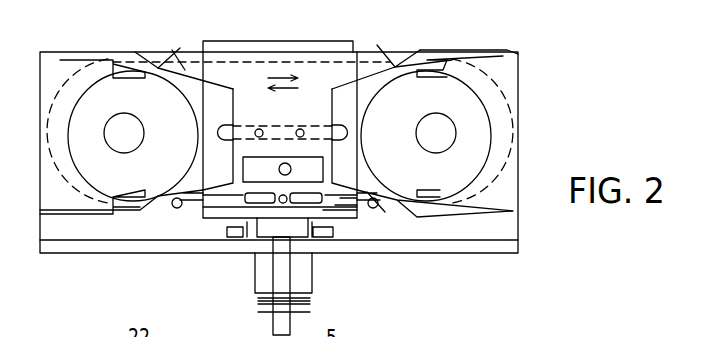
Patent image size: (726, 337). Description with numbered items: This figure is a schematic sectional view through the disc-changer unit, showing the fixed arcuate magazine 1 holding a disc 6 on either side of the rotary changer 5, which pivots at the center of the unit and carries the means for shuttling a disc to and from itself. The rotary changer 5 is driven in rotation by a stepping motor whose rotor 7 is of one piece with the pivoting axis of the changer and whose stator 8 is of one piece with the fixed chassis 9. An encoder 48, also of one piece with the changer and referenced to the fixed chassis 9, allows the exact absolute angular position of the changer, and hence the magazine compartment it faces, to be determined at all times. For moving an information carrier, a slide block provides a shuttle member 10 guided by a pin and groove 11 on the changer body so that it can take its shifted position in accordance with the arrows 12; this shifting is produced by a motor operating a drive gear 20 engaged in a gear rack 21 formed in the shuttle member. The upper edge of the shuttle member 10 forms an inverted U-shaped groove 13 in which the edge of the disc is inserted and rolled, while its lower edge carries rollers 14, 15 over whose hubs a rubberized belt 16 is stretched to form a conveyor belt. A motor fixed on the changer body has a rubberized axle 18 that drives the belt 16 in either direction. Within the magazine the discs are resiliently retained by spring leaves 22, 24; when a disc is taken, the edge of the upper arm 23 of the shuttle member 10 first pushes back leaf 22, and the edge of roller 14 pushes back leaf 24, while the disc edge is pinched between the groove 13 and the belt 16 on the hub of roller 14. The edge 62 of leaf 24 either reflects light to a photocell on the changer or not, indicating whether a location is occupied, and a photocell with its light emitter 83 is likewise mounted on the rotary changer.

The fixed arcuate magazine 1 is at (507, 53).
The rotary changer 5 is at (313, 44).
The disc 6 is at (497, 101).
The rotor 7 is at (265, 230).
The stator 8 is at (322, 238).
The fixed chassis 9 is at (482, 242).
The shuttle member 10 is at (252, 100).
The pin and groove 11 is at (224, 117).
The arrows 12 is at (280, 66).
The inverted U-shaped groove 13 is at (364, 62).
The roller 14 is at (172, 206).
The roller 15 is at (376, 207).
The rubberized belt 16 is at (170, 198).
The rubberized axle 18 is at (345, 208).
The drive gear 20 is at (263, 163).
The gear rack 21 is at (317, 178).
The spring leaf 22 is at (126, 52).
The upper arm 23 is at (175, 52).
The spring leaf 24 is at (113, 212).
The encoder 48 is at (260, 302).
The edge 62 is at (225, 186).
The photocell and light emitter 83 is at (224, 238).